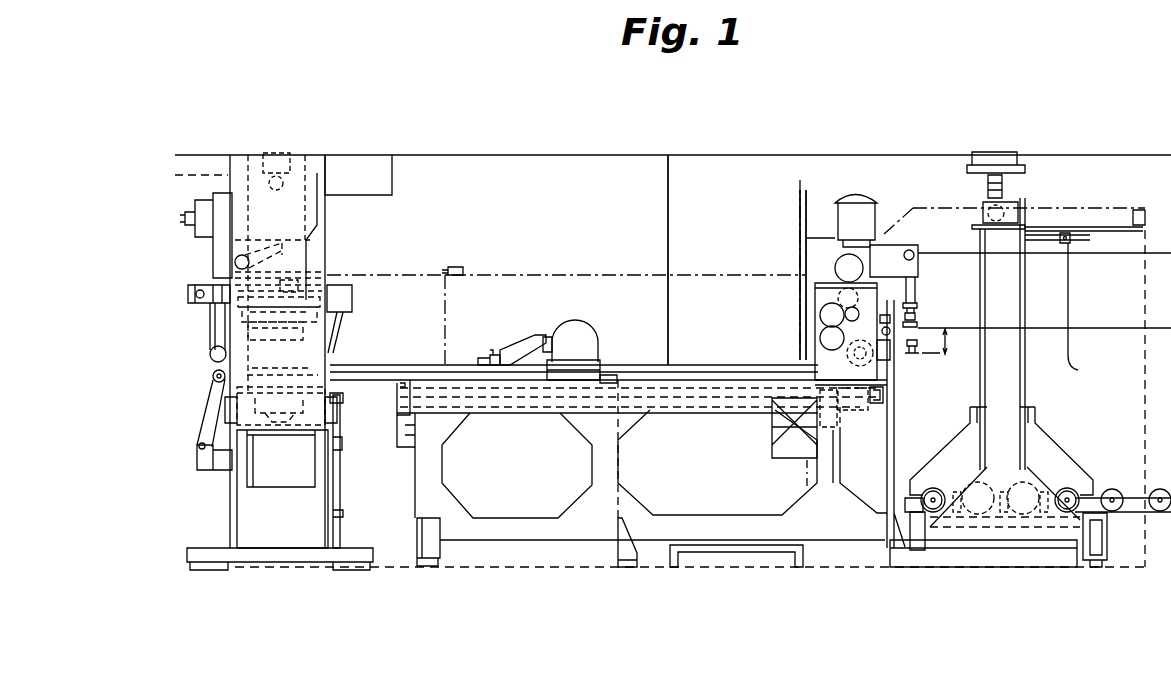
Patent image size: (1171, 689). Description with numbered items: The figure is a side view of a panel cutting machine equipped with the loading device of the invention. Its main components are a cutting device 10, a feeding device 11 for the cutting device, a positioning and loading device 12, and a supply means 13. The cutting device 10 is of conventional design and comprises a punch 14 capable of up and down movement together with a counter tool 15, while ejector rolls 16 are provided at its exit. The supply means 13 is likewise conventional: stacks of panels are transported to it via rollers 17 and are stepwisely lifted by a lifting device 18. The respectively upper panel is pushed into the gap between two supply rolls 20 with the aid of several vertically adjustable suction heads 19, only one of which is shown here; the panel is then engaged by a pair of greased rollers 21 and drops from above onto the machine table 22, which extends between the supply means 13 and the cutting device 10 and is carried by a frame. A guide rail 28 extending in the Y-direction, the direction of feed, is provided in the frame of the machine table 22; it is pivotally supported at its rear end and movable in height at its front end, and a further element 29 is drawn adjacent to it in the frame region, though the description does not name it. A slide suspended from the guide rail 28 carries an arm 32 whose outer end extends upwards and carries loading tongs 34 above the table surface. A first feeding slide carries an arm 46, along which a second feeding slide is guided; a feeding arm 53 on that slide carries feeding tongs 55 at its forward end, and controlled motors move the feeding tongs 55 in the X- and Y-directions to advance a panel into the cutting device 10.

The cutting device 10 is at (256, 150).
The feeding device 11 is at (544, 308).
The positioning and loading device 12 is at (709, 294).
The supply means 13 is at (956, 313).
The punch 14 is at (243, 313).
The counter tool 15 is at (250, 383).
The ejector rolls 16 is at (210, 353).
The rollers 17 is at (1113, 489).
The lifting device 18 is at (1030, 437).
The suction heads 19 is at (918, 326).
The supply rolls 20 is at (889, 333).
The greased rollers 21 is at (828, 316).
The machine table 22 is at (636, 369).
The guide rail 28 is at (857, 394).
The bracket 29 is at (880, 400).
The arm 32 is at (822, 405).
The loading tongs 34 is at (822, 356).
The arm 46 is at (585, 336).
The feeding arm 53 is at (528, 350).
The feeding tongs 55 is at (483, 356).